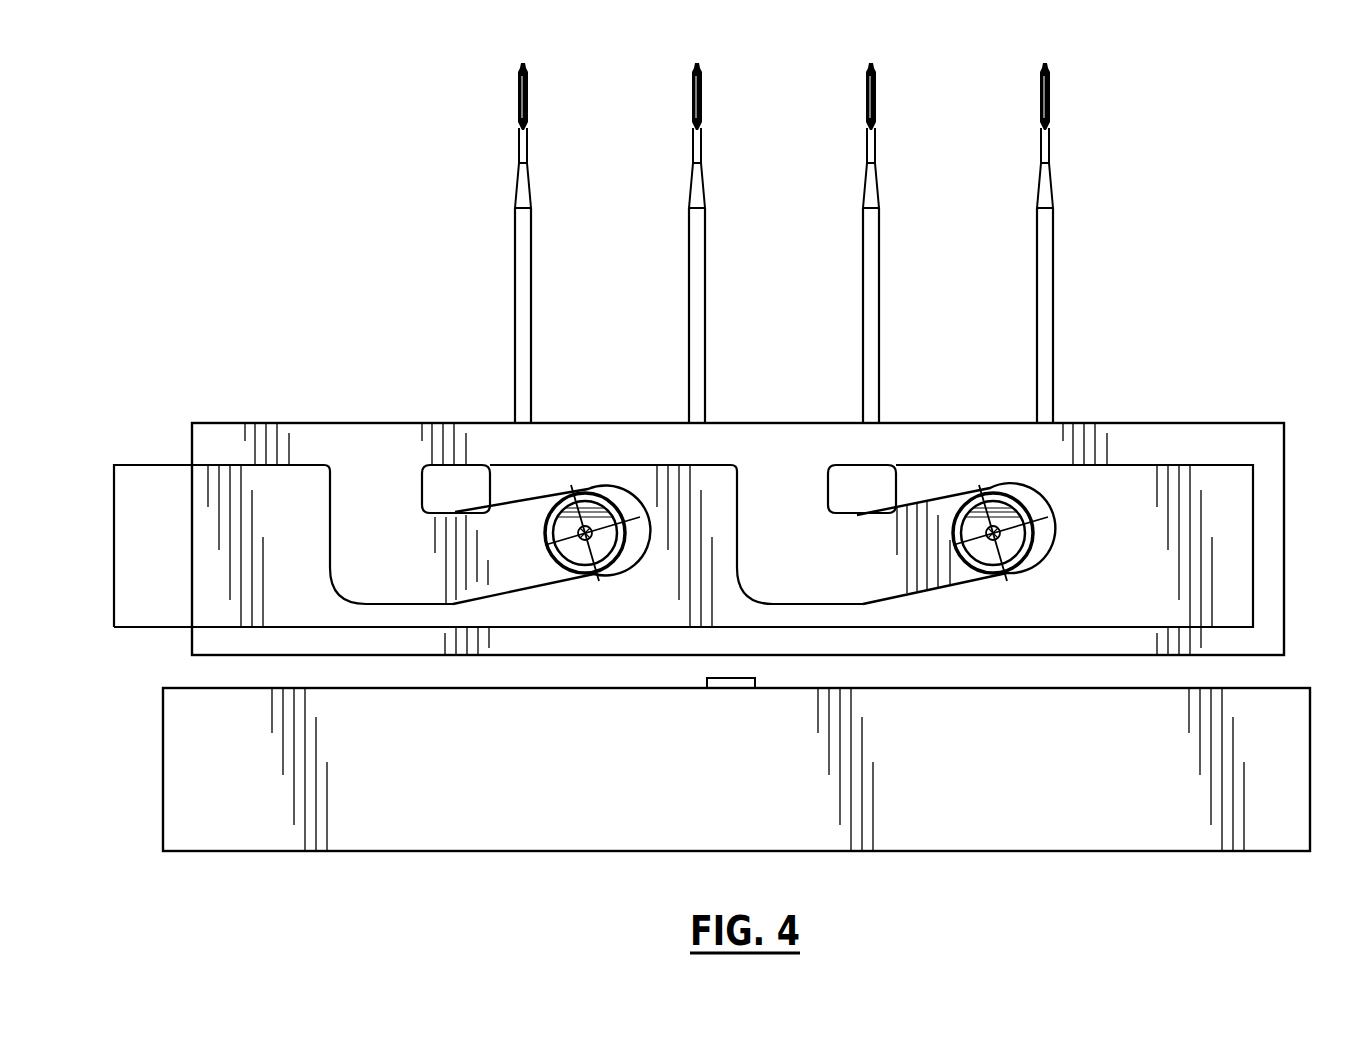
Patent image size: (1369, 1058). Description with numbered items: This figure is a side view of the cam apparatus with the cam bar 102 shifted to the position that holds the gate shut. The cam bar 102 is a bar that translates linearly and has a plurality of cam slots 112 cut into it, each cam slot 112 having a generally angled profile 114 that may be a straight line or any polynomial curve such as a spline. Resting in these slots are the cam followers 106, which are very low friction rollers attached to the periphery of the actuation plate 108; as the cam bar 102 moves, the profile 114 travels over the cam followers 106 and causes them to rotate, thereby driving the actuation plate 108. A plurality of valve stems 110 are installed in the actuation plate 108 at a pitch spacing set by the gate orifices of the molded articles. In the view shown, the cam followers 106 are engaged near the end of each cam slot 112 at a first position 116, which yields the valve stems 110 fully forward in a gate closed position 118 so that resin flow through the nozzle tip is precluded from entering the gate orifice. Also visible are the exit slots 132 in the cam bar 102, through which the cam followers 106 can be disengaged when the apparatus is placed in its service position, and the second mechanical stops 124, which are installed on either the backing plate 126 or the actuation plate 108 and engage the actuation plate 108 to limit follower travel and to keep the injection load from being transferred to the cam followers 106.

The cam bar 102 is at (984, 490).
The cam follower 106 is at (570, 494).
The actuation plate 108 is at (1197, 423).
The valve stem 110 is at (862, 313).
The cam slot 112 is at (490, 505).
The profile 114 is at (503, 572).
The first position 116 is at (603, 574).
The gate closed position 118 is at (340, 287).
The second mechanical stop 124 is at (738, 679).
The backing plate 126 is at (1208, 688).
The exit slot 132 is at (369, 495).